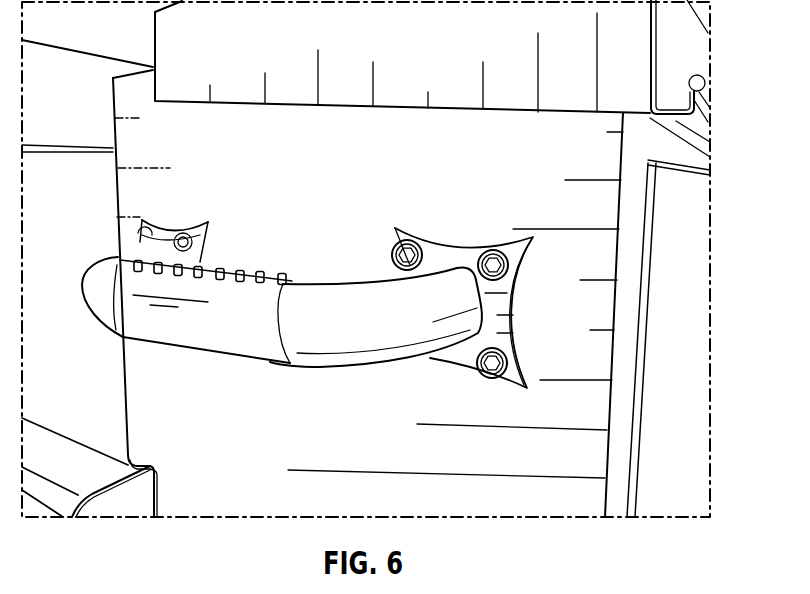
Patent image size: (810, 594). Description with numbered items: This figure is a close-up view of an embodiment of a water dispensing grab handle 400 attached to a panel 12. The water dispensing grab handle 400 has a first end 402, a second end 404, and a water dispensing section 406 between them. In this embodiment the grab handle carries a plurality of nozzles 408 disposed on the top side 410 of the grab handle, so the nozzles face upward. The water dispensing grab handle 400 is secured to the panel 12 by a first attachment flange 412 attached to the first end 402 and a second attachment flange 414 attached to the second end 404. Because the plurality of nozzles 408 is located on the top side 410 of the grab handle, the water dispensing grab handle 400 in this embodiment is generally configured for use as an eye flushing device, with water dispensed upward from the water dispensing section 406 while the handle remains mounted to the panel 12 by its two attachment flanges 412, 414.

The panel 12 is at (280, 447).
The water dispensing grab handle 400 is at (600, 195).
The first end 402 is at (155, 232).
The second end 404 is at (398, 357).
The water dispensing section 406 is at (207, 292).
The plurality of nozzles 408 is at (178, 264).
The top side 410 is at (287, 278).
The first attachment flange 412 is at (157, 218).
The second attachment flange 414 is at (517, 320).